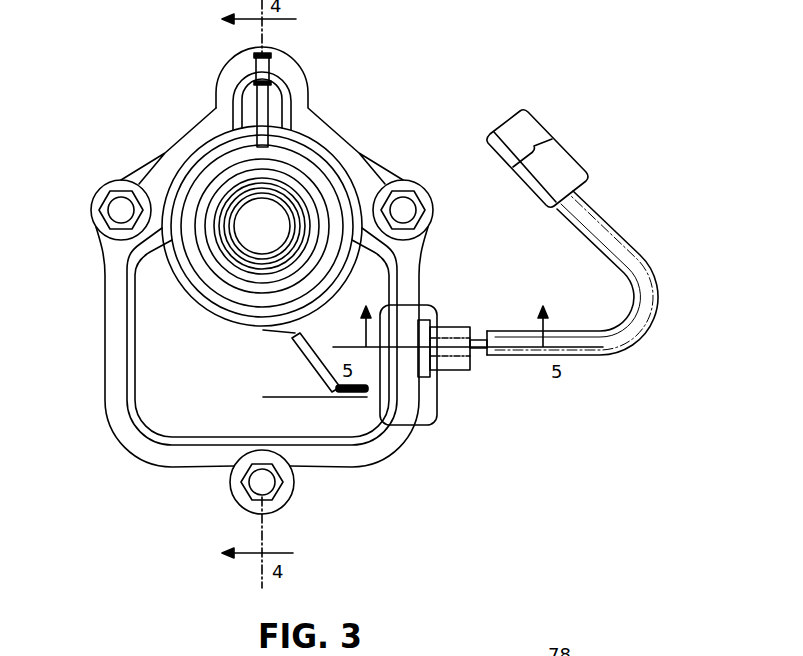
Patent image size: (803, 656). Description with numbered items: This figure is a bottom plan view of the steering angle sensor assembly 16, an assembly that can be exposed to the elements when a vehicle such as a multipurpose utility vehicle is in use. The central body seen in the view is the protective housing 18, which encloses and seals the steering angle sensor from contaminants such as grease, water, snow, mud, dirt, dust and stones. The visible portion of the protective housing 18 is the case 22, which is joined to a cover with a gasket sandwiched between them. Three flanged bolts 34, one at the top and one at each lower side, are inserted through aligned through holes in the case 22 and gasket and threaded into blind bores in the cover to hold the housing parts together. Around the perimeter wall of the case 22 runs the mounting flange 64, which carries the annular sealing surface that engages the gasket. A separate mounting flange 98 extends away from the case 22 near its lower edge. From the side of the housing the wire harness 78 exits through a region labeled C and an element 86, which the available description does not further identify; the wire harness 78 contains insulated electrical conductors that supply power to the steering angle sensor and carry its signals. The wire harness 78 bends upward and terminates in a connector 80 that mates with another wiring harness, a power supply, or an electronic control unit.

The steering angle sensor assembly 16 is at (680, 279).
The protective housing 18 is at (102, 430).
The case 22 is at (152, 320).
The flanged bolt 34 is at (97, 200).
The mounting flange 64 is at (118, 383).
The wire harness 78 is at (660, 300).
The connector 80 is at (531, 110).
The electrical terminal 86 is at (457, 323).
The mounting flange 98 is at (293, 350).
The connector housing C is at (412, 425).